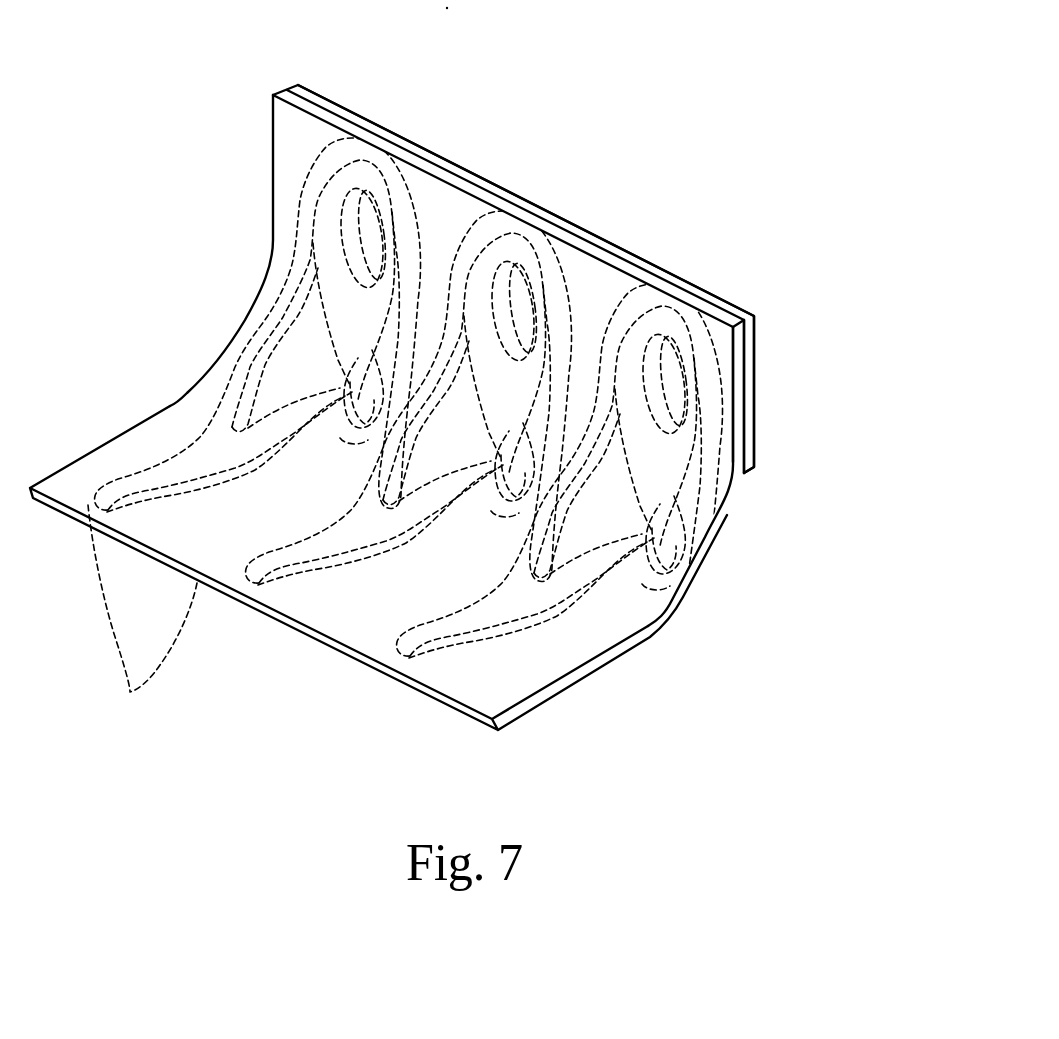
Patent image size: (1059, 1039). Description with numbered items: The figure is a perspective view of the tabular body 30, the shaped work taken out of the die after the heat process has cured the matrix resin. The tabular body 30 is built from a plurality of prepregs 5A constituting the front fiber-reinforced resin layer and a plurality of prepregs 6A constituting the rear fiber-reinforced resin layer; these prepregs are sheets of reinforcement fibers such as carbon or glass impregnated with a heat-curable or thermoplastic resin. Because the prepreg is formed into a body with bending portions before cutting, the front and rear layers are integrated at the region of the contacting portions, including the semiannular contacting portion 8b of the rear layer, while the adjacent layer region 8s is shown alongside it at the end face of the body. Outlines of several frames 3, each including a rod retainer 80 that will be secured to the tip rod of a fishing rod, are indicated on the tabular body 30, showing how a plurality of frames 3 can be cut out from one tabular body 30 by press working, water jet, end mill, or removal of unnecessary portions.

The tabular body 30 is at (600, 81).
The prepregs (laminated material) 5A is at (768, 428).
The prepregs (laminated material) 6A is at (553, 668).
The contacting portion 8b is at (740, 345).
The surface layer 8s is at (750, 374).
The rod retainer 80 is at (340, 438).
The frame 3 is at (278, 647).